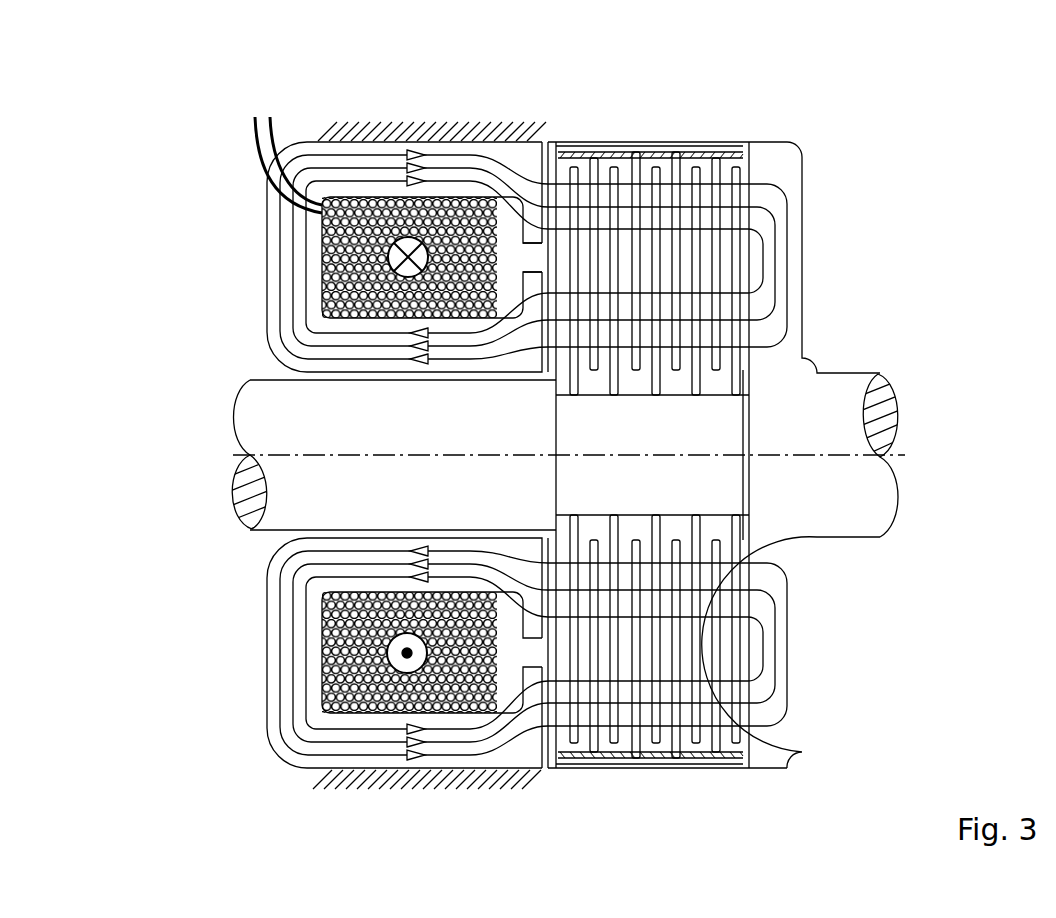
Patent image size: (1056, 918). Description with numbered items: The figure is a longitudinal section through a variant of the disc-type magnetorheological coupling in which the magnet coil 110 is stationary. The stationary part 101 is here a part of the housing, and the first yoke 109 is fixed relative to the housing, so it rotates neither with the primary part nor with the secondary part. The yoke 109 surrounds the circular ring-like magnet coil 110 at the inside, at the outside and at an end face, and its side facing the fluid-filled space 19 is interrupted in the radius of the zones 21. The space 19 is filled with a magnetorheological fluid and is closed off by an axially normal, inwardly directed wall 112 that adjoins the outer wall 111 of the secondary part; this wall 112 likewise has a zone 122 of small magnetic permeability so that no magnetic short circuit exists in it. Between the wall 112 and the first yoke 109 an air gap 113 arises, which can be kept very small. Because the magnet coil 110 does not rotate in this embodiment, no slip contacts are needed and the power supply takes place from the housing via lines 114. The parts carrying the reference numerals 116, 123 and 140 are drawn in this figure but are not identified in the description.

The stationary part 101 is at (377, 127).
The first yoke 109 is at (527, 157).
The magnet coil 110 is at (358, 220).
The outer wall 111 is at (667, 147).
The wall 112 is at (553, 277).
The air gap 113 is at (543, 310).
The lines 114 is at (262, 140).
The cooling plate 116 is at (545, 680).
The zone of small magnetic permeability 122 is at (533, 257).
The magnetic flux path 123 is at (258, 602).
The coolant flow 140 is at (703, 665).
The space 19 is at (667, 280).
The zones 21 is at (658, 258).